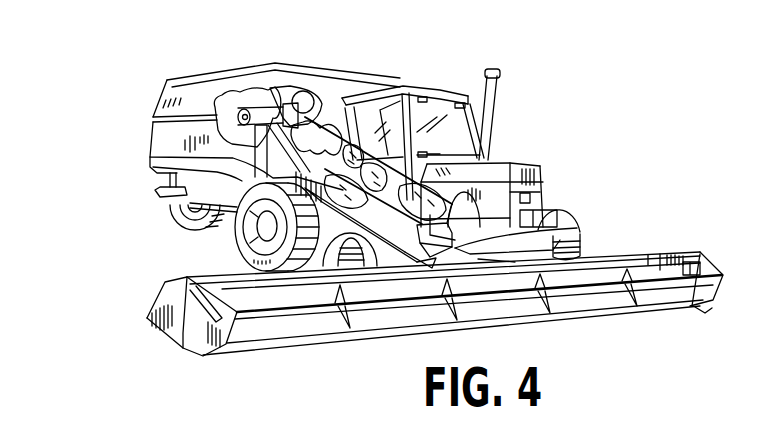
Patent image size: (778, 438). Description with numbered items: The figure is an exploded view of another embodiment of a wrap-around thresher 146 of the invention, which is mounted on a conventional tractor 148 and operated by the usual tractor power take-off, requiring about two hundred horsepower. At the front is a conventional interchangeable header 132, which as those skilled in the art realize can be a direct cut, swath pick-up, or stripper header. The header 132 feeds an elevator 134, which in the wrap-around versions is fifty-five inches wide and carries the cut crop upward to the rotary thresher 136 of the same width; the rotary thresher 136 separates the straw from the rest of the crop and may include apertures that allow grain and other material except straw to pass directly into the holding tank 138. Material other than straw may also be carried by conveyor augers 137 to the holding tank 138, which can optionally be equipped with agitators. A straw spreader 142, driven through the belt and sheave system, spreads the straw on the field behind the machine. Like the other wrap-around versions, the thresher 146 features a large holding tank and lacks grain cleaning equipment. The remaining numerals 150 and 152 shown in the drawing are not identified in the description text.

The header 132 is at (214, 328).
The tractor body 134 is at (578, 231).
The conveyor 136 is at (322, 130).
The lower body panel 137 is at (222, 172).
The collection bin 138 is at (170, 132).
The hitch bracket 142 is at (163, 192).
The direction of travel arrow 146 is at (563, 167).
The engine hood 148 is at (490, 163).
The front wheel 150 is at (232, 241).
The rear wheel 152 is at (172, 215).